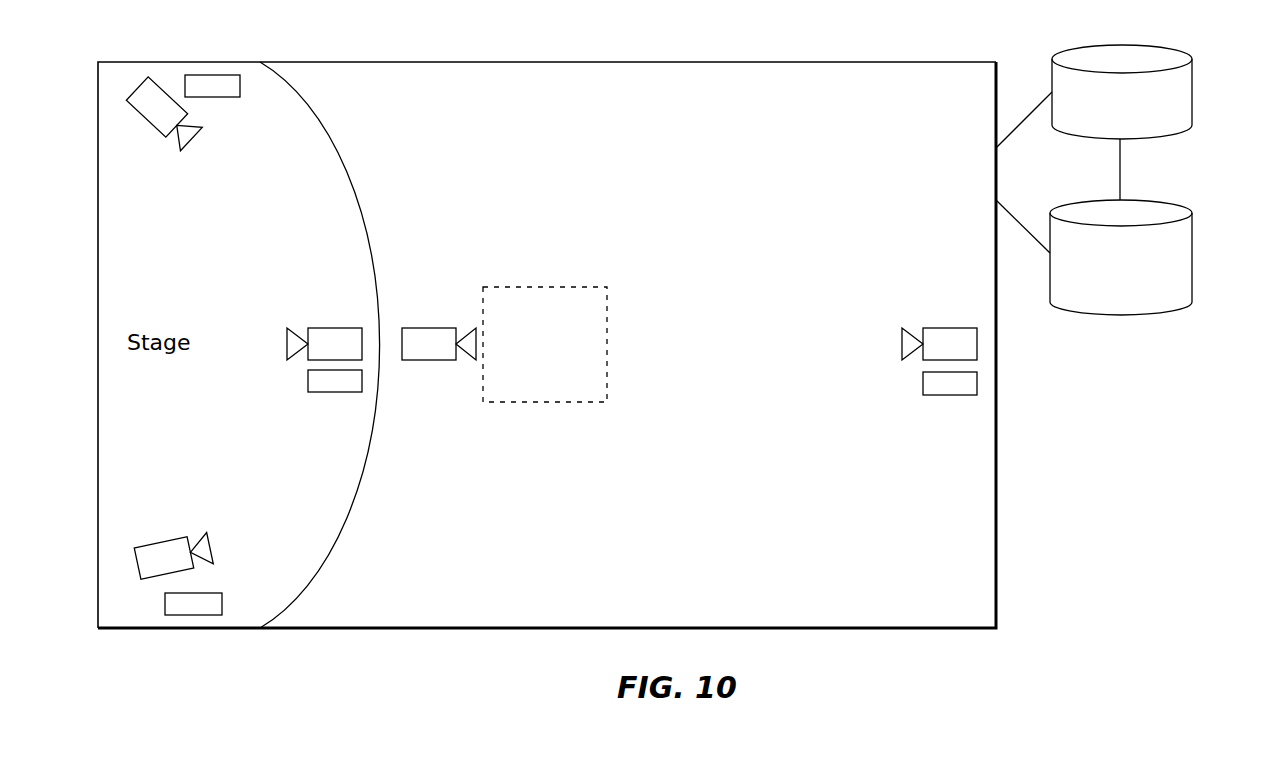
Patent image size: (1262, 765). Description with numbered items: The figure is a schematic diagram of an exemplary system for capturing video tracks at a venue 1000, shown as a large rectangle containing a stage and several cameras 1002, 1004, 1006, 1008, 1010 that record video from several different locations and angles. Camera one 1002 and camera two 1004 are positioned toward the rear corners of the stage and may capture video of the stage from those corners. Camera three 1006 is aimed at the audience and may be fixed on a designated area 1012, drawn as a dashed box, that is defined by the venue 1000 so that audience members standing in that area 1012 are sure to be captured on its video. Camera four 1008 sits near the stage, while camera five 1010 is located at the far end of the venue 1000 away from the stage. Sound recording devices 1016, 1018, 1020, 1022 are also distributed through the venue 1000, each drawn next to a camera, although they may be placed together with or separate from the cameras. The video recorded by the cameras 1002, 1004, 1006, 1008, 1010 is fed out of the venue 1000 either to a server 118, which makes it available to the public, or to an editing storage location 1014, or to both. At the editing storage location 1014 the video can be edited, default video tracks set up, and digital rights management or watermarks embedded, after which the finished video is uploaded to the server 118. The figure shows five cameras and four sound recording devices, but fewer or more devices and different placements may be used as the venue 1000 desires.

The venue 1000 is at (780, 58).
The camera 1 1002 is at (143, 120).
The camera 2 1004 is at (160, 542).
The camera 3 1006 is at (428, 328).
The camera 4 1008 is at (335, 328).
The camera 5 1010 is at (947, 328).
The area 1012 is at (562, 287).
The editing storage location 1014 is at (1150, 200).
The sound recording device 1016 is at (220, 97).
The sound recording device 1018 is at (207, 593).
The sound recording device 1020 is at (337, 396).
The sound recording device 1022 is at (947, 396).
The server 118 is at (1150, 46).